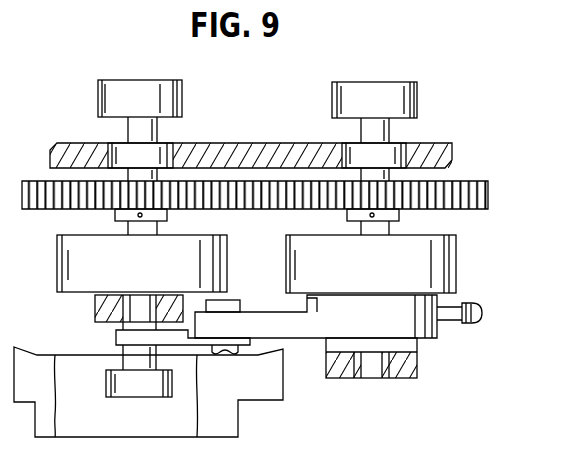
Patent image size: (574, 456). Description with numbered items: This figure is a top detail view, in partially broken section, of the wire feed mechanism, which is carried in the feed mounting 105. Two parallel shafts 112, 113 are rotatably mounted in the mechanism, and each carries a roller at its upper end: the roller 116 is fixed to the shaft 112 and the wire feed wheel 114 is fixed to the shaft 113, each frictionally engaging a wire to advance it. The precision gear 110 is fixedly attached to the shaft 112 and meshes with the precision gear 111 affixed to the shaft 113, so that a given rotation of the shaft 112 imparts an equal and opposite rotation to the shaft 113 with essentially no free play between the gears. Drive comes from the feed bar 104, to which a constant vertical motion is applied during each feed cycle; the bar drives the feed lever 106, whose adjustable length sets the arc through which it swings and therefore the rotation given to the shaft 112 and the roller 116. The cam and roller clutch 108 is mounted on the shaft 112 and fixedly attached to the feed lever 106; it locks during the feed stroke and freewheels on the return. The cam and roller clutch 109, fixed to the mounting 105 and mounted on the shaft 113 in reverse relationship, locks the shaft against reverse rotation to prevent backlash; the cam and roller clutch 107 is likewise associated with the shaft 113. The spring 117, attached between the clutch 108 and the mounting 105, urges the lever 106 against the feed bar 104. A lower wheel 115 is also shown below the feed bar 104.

The feed bar 104 is at (233, 422).
The feed mounting 105 is at (249, 157).
The feed lever 106 is at (298, 318).
The cam and roller clutch 107 is at (142, 256).
The cam and roller clutch 108 is at (449, 270).
The cam and roller clutch 109 is at (68, 272).
The precision gear 110 is at (463, 210).
The precision gear 111 is at (42, 207).
The shaft 112 is at (368, 134).
The shaft 113 is at (133, 128).
The wire feed wheel 114 is at (110, 86).
The wheel 115 is at (145, 390).
The roller 116 is at (349, 92).
The spring 117 is at (467, 323).